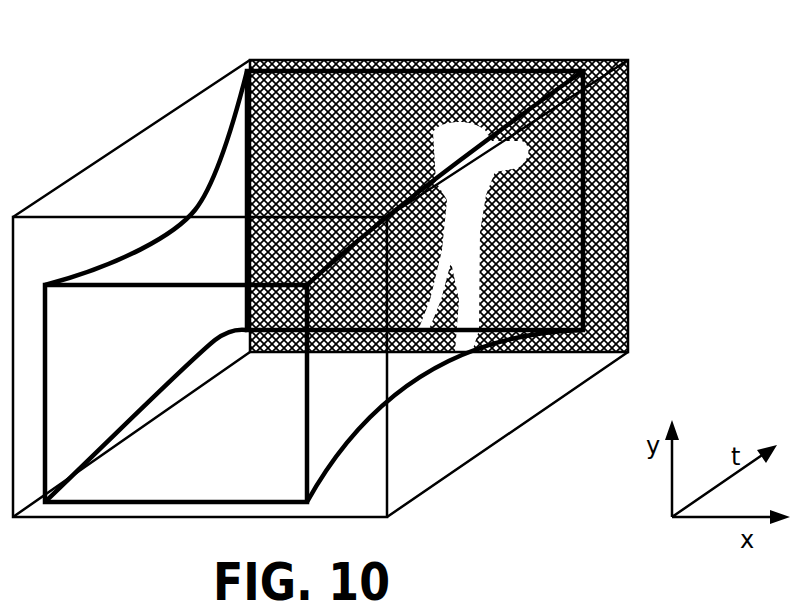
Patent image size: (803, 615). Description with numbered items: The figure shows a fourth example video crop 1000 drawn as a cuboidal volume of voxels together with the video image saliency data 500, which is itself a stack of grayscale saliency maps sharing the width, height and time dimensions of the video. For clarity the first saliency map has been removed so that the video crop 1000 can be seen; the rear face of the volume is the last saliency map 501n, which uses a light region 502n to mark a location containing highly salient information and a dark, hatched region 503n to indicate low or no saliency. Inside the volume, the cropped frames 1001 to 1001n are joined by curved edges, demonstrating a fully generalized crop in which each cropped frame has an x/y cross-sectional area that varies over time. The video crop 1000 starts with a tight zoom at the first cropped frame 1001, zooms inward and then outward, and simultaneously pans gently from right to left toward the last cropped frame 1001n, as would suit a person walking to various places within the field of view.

The video image saliency data 500 is at (193, 102).
The saliency map 501n is at (627, 208).
The region 502n is at (452, 128).
The region 503n is at (605, 335).
The video crop 1000 is at (187, 205).
The cropped frame 1001 is at (307, 460).
The cropped frame 1001n is at (583, 247).